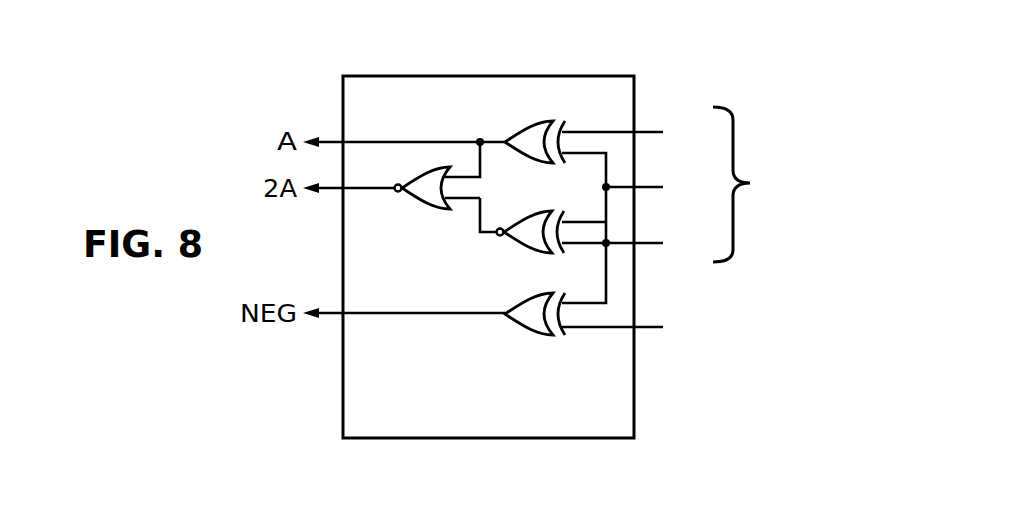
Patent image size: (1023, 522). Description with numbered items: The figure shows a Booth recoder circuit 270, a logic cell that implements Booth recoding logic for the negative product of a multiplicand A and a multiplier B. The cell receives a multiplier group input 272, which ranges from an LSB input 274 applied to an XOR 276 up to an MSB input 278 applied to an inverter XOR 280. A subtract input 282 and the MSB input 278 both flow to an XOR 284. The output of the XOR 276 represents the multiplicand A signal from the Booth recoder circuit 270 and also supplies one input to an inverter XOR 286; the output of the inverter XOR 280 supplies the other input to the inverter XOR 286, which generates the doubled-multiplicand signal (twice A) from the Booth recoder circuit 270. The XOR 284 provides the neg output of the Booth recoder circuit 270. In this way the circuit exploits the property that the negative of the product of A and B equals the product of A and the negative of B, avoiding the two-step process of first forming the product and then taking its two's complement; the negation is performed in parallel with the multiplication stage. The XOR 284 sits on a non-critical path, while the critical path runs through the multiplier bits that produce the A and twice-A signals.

The Booth recoder circuit 270 is at (812, 108).
The multiplier group input 272 is at (838, 213).
The LSB input 274 is at (688, 112).
The XOR 276 is at (525, 123).
The MSB input 278 is at (690, 260).
The inverter XOR 280 is at (522, 256).
The subtract input 282 is at (743, 337).
The XOR 284 is at (522, 338).
The inverter XOR 286 is at (427, 212).